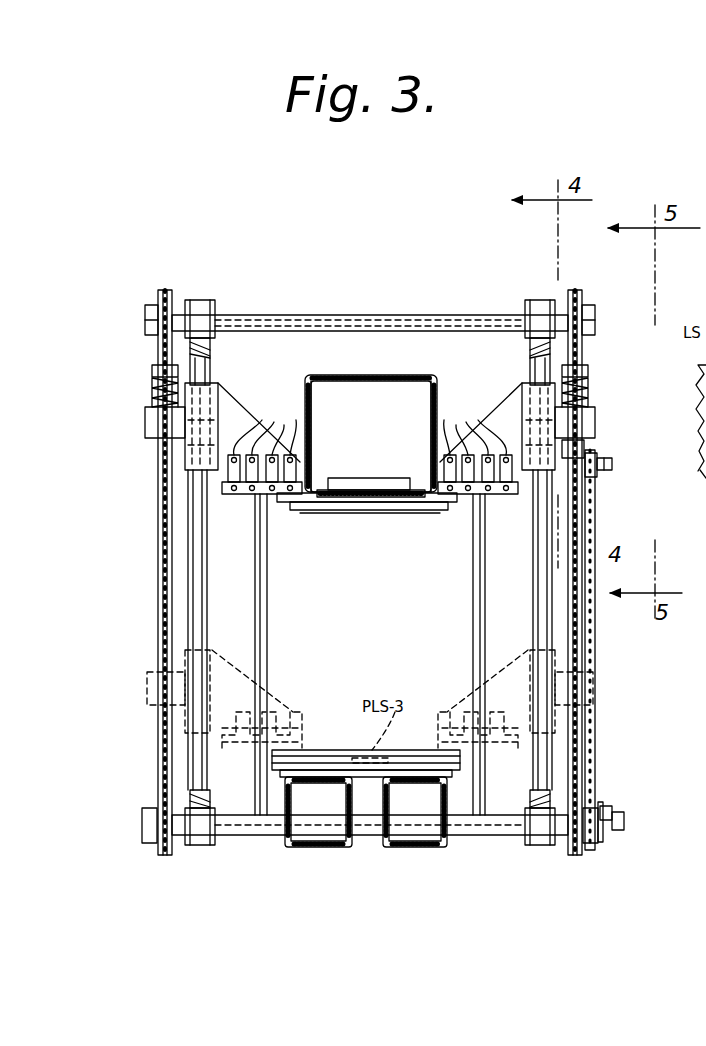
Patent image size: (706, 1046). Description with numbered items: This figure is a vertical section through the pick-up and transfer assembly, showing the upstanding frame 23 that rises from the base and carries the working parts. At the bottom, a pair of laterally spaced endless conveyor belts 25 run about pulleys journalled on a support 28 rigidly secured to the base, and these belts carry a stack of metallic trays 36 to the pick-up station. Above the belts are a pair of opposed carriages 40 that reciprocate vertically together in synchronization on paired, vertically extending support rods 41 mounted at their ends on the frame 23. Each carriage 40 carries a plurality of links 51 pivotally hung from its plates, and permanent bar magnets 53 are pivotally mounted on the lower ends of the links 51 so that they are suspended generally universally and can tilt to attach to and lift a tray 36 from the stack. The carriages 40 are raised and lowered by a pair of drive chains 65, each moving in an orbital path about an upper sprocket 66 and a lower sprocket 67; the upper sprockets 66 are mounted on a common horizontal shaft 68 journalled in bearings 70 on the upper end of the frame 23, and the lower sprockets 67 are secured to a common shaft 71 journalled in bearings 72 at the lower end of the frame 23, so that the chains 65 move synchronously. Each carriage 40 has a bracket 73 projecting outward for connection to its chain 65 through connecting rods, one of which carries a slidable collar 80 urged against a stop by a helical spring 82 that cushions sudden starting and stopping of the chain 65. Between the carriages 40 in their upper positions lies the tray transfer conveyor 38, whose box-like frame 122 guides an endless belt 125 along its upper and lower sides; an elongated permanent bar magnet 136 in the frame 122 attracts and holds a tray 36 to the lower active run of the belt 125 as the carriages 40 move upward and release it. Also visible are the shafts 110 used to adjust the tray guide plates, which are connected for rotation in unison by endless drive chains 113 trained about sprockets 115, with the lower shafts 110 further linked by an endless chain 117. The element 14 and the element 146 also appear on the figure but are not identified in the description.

The frame 14 is at (698, 498).
The upstanding frame 23 is at (210, 346).
The endless conveyor belts 25 is at (392, 852).
The support 28 is at (346, 804).
The tray 36 is at (346, 505).
The tray transfer conveyor 38 is at (418, 378).
The carriage 40 is at (258, 390).
The support rods 41 is at (200, 623).
The links 51 is at (370, 426).
The permanent bar magnets 53 is at (252, 495).
The drive chains 65 is at (158, 589).
The upper sprockets 66 is at (158, 307).
The lower sprockets 67 is at (150, 823).
The shaft 68 is at (372, 315).
The bearings 70 is at (202, 300).
The shaft 71 is at (455, 838).
The bearings 72 is at (200, 840).
The bracket 73 is at (160, 425).
The slidable collar 80 is at (158, 370).
The helical spring 82 is at (158, 392).
The shafts 110 is at (613, 465).
The endless drive chains 113 is at (596, 646).
The sprocket 115 is at (597, 475).
The endless chain 117 is at (613, 811).
The frame 122 is at (434, 404).
The endless belt 125 is at (366, 377).
The permanent bar magnet 136 is at (370, 478).
The limit switch lead 146 is at (697, 437).